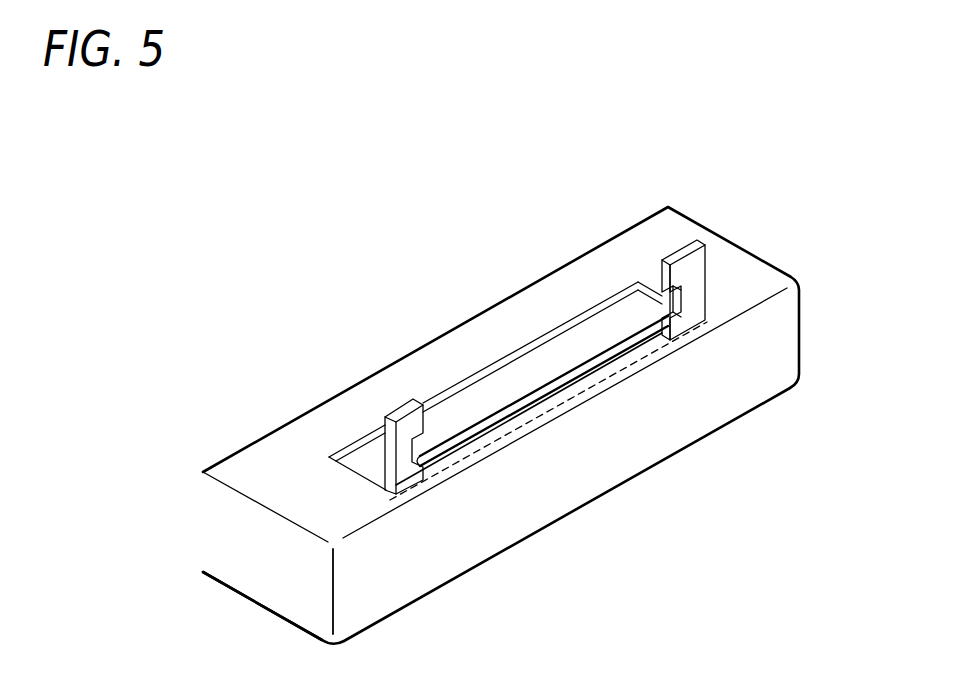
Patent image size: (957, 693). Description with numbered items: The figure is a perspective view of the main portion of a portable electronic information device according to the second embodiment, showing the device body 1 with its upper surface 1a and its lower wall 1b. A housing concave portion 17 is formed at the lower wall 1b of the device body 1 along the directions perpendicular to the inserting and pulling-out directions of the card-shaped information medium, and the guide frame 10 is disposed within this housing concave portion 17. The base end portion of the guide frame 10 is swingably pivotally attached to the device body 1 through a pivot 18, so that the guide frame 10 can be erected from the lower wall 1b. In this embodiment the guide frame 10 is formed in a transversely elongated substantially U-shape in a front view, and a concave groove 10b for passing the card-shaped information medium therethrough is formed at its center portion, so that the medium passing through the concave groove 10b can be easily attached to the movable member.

The device body 1 is at (772, 354).
The upper surface 1a is at (278, 614).
The lower wall 1b is at (285, 496).
The guide frame 10 is at (400, 410).
The concave groove 10b is at (553, 387).
The housing concave portion 17 is at (360, 456).
The pivot 18 is at (385, 500).